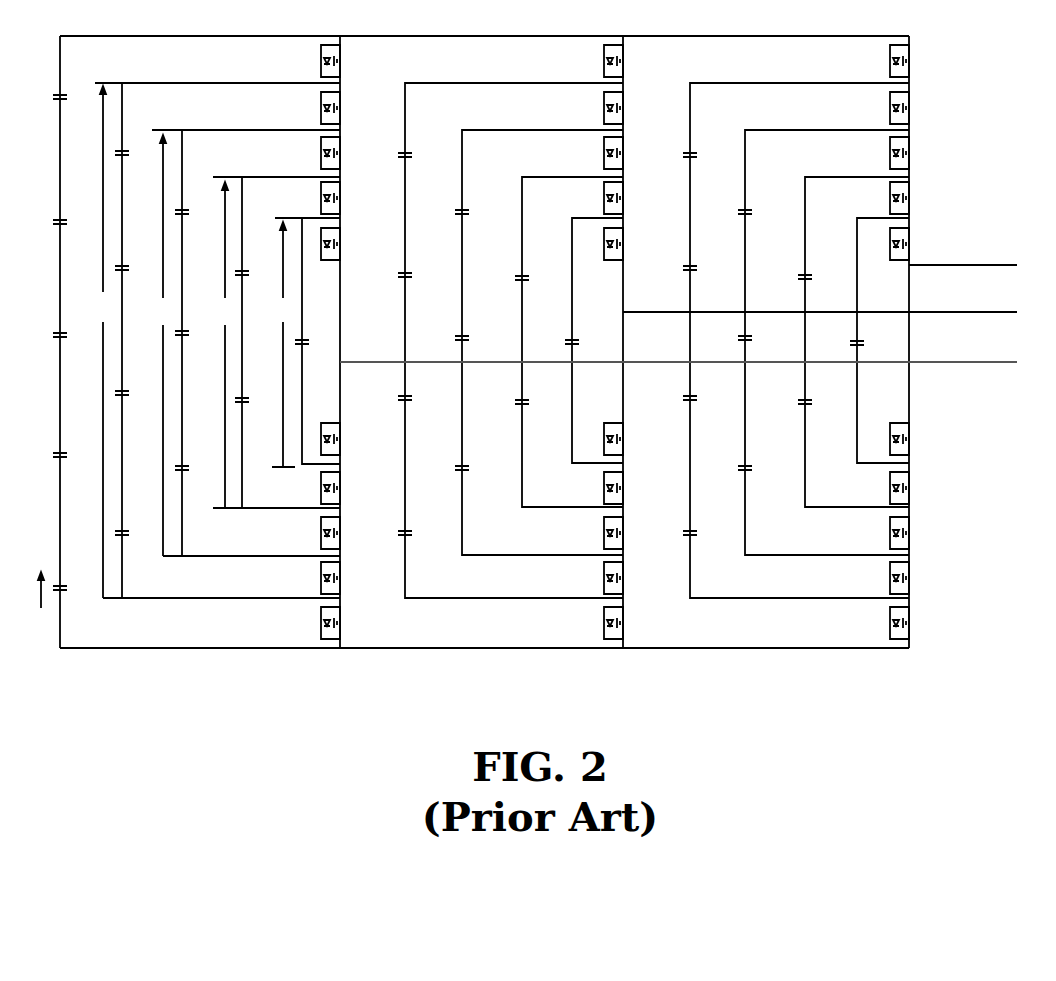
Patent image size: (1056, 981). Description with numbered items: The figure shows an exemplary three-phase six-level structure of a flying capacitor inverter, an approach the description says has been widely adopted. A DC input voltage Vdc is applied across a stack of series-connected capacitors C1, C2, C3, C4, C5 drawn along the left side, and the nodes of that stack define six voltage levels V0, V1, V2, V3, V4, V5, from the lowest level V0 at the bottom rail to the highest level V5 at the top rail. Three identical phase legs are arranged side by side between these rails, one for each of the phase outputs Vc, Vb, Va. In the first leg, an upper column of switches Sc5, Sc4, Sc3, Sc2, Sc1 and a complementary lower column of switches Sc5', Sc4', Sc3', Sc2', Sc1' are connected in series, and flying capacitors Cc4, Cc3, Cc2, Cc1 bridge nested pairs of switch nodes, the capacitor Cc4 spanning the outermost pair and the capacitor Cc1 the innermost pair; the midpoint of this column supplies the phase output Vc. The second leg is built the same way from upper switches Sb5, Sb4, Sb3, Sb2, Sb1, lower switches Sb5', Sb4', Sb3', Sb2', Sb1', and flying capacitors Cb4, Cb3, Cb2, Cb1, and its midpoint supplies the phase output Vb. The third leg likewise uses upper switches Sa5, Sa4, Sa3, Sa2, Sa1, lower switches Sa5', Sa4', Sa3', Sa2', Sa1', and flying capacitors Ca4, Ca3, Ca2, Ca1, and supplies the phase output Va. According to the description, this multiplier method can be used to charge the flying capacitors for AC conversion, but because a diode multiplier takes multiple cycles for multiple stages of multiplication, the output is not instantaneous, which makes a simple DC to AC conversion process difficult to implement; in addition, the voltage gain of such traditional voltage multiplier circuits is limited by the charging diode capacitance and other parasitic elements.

The input capacitor C1 is at (66, 90).
The input capacitor C2 is at (66, 217).
The input capacitor C3 is at (66, 348).
The input capacitor C4 is at (66, 448).
The input capacitor C5 is at (66, 581).
The flying capacitor Cc4 is at (131, 343).
The flying capacitor Cc3 is at (190, 331).
The flying capacitor Cc2 is at (250, 329).
The flying capacitor Cc1 is at (310, 333).
The flying capacitor Cb4 is at (417, 348).
The flying capacitor Cb3 is at (474, 344).
The flying capacitor Cb2 is at (534, 344).
The flying capacitor Cb1 is at (584, 346).
The flying capacitor Ca4 is at (702, 348).
The flying capacitor Ca3 is at (757, 344).
The flying capacitor Ca2 is at (817, 344).
The flying capacitor Ca1 is at (869, 347).
The switch Sc5 is at (346, 61).
The switch Sc4 is at (346, 108).
The switch Sc3 is at (346, 153).
The switch Sc2 is at (346, 198).
The switch Sc1 is at (346, 244).
The switch Sc5' is at (347, 439).
The switch Sc4' is at (347, 488).
The switch Sc3' is at (347, 533).
The switch Sc2' is at (347, 578).
The switch Sc1' is at (347, 623).
The switch Sb5 is at (629, 61).
The switch Sb4 is at (629, 108).
The switch Sb3 is at (629, 153).
The switch Sb2 is at (629, 198).
The switch Sb1 is at (629, 244).
The switch Sb5' is at (630, 439).
The switch Sb4' is at (630, 488).
The switch Sb3' is at (630, 533).
The switch Sb2' is at (630, 578).
The switch Sb1' is at (630, 623).
The switch Sa5 is at (915, 61).
The switch Sa4 is at (915, 108).
The switch Sa3 is at (915, 153).
The switch Sa2 is at (915, 198).
The switch Sa1 is at (915, 244).
The switch Sa5' is at (916, 439).
The switch Sa4' is at (916, 488).
The switch Sa3' is at (916, 533).
The switch Sa2' is at (916, 578).
The switch Sa1' is at (916, 623).
The phase output voltage Va is at (974, 267).
The phase output voltage Vb is at (831, 314).
The phase output voltage Vc is at (689, 364).
The DC input voltage Vdc is at (24, 590).
The voltage level V0 is at (49, 642).
The voltage level V1 is at (283, 344).
The voltage level V2 is at (221, 345).
The voltage level V3 is at (160, 345).
The voltage level V4 is at (100, 342).
The voltage level V5 is at (49, 45).